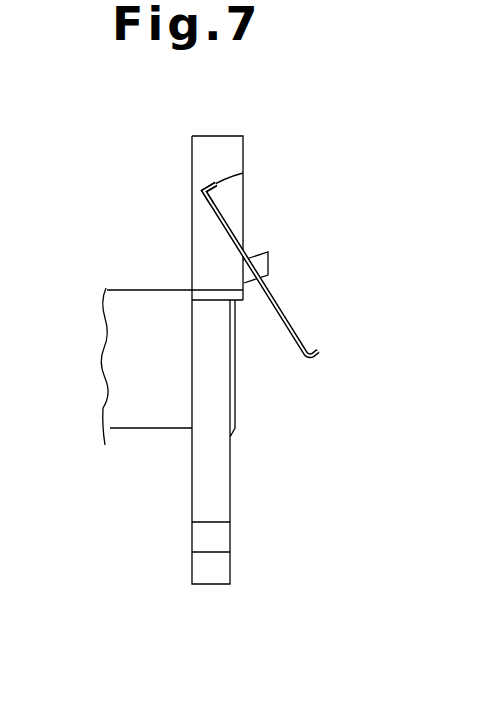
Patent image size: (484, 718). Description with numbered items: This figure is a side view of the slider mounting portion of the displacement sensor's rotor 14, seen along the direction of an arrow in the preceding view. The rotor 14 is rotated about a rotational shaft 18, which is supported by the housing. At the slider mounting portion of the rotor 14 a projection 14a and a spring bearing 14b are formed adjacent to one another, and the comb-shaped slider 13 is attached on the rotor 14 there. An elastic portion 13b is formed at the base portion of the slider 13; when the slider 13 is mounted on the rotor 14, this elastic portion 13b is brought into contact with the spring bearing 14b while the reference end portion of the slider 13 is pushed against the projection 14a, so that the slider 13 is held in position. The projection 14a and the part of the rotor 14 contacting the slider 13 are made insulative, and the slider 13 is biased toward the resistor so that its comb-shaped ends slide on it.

The slider 13 is at (290, 318).
The elastic portion 13b is at (212, 192).
The rotor 14 is at (231, 488).
The projection 14a is at (268, 262).
The spring bearing 14b is at (244, 173).
The rotational shaft 18 is at (133, 418).